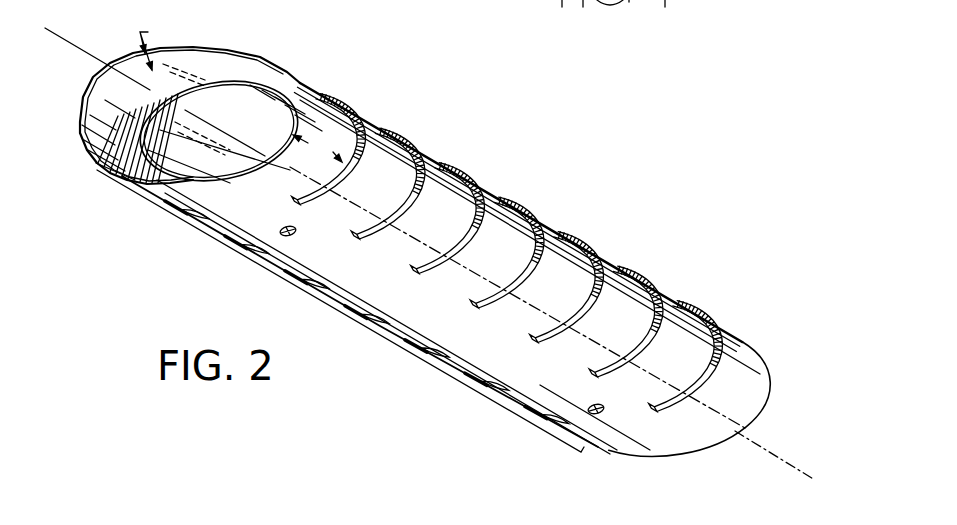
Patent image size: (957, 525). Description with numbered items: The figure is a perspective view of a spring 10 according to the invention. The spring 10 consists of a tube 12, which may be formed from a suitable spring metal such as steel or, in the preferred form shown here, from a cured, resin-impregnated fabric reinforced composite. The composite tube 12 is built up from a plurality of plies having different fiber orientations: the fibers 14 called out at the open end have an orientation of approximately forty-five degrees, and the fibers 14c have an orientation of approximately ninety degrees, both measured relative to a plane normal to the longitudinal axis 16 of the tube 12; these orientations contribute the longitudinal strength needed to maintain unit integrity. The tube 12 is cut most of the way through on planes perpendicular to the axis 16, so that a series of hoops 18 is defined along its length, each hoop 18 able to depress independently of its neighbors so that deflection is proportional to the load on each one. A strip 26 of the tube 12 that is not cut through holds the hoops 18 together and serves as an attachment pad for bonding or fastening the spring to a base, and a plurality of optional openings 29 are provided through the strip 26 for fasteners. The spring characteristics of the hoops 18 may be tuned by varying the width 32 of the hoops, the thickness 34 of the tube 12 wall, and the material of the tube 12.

The spring 10 is at (507, 163).
The tube 12 is at (373, 332).
The fibers 14 is at (145, 110).
The fibers 14c is at (203, 143).
The axis 16 is at (78, 45).
The hoops 18 is at (222, 46).
The strip 26 is at (423, 310).
The openings 29 is at (288, 235).
The width 32 is at (317, 148).
The thickness 34 is at (157, 44).